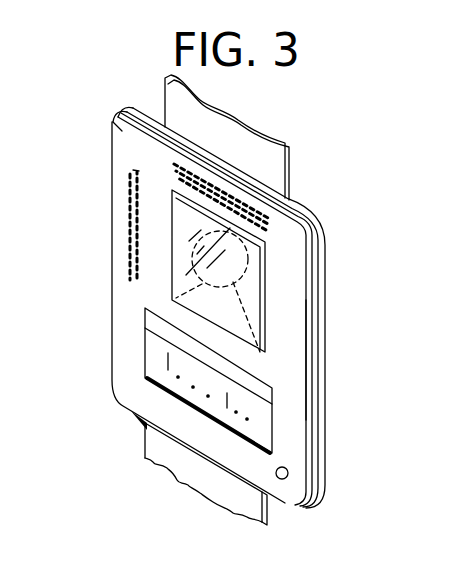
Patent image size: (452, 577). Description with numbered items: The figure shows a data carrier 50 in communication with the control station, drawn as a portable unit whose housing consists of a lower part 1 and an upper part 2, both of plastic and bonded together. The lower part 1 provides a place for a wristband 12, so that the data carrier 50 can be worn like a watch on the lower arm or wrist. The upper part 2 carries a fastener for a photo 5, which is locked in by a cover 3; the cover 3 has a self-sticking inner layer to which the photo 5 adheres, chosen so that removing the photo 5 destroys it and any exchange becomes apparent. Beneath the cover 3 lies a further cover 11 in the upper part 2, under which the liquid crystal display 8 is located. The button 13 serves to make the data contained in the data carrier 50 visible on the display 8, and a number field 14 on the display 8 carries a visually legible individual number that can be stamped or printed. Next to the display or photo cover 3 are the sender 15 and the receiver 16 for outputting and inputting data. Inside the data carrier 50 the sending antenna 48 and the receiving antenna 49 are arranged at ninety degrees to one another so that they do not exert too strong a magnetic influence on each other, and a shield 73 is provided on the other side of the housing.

The lower part 1 is at (320, 333).
The upper part 2 is at (113, 122).
The cover 3 is at (258, 305).
The photo 5 is at (178, 279).
The liquid crystal display 8 is at (268, 424).
The cover 11 is at (173, 390).
The wristband 12 is at (189, 475).
The button 13 is at (288, 473).
The number field 14 is at (272, 390).
The sender 15 is at (279, 221).
The receiver 16 is at (114, 234).
The sending antenna 48 is at (233, 172).
The receiving antenna 49 is at (127, 201).
The data carrier 50 is at (96, 341).
The shield 73 is at (0, 152).